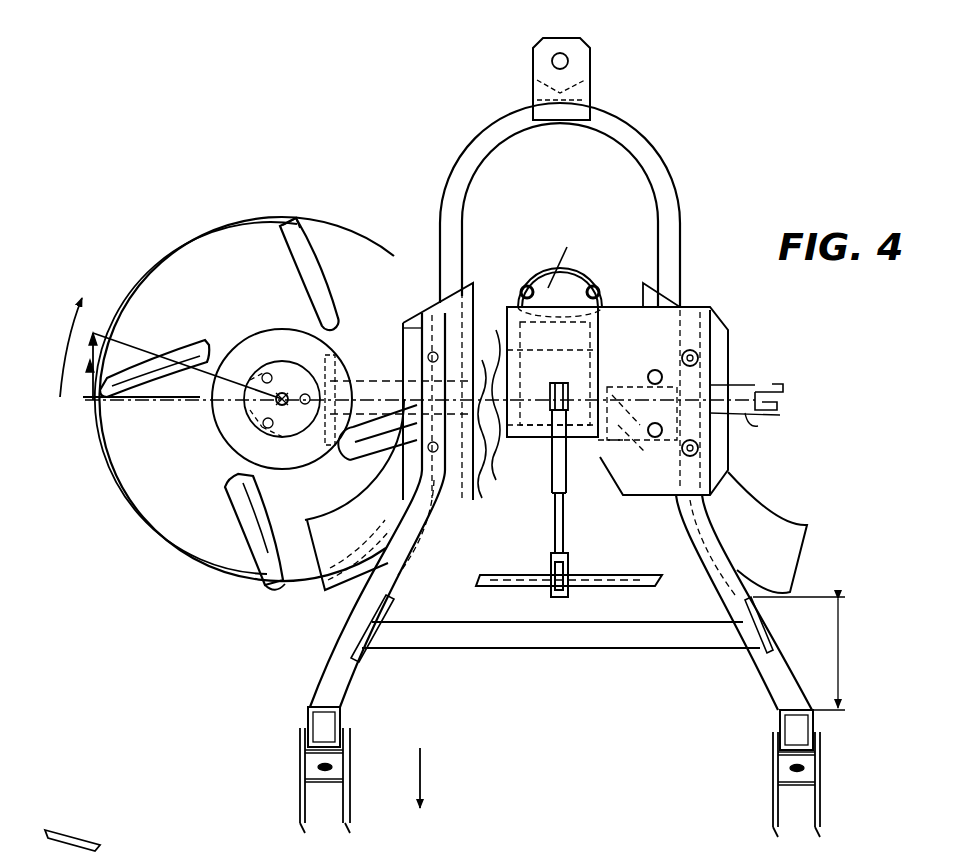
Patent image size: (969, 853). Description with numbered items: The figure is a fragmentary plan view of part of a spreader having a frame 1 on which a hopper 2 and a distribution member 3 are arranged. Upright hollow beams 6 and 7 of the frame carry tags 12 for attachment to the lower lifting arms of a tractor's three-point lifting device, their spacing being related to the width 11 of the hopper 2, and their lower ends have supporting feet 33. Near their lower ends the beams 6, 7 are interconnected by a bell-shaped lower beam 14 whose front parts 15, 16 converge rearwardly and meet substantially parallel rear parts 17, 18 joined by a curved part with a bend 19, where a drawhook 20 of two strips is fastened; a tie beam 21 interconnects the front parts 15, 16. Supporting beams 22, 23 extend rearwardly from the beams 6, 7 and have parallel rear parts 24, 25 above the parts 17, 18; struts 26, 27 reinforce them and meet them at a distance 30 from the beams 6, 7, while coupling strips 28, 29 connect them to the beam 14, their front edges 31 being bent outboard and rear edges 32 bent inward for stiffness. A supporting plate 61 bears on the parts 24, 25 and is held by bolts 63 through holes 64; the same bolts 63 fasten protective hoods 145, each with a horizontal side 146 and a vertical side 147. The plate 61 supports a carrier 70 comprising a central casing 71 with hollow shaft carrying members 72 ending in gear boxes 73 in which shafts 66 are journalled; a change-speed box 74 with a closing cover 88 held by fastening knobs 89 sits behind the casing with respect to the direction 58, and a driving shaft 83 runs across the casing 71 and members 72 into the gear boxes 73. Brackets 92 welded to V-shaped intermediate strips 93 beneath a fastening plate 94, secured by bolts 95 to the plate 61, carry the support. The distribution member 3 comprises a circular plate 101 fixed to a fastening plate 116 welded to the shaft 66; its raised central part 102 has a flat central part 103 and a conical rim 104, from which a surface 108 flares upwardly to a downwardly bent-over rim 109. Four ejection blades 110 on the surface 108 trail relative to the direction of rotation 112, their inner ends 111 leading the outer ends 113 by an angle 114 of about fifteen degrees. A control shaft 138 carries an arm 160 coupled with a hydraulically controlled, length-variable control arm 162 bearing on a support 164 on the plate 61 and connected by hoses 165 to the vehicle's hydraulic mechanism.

The frame 1 is at (300, 693).
The hopper 2 is at (511, 840).
The distribution member 3 is at (232, 220).
The upright hollow beam 6 is at (345, 710).
The upright hollow beam 7 is at (778, 728).
The width of the hopper 11 is at (122, 845).
The tags 12 is at (346, 822).
The lower beam 14 is at (668, 140).
The front part of the lower beam 15 is at (360, 665).
The front part of the lower beam 16 is at (775, 692).
The rear part of the lower beam 17 is at (457, 267).
The rear part of the lower beam 18 is at (658, 245).
The bend 19 is at (565, 122).
The drawhook 20 is at (585, 50).
The tie beam 21 is at (535, 652).
The supporting beam 22 is at (372, 665).
The supporting beam 23 is at (755, 660).
The rear part of supporting beam 24 is at (403, 330).
The rear part of supporting beam 25 is at (735, 318).
The strut 26 is at (358, 618).
The strut 27 is at (755, 625).
The coupling strip 28 is at (412, 572).
The coupling strip 29 is at (700, 580).
The distance 30 is at (840, 665).
The front edges of the coupling strips 31 is at (370, 596).
The rear edges of the coupling strips 32 is at (430, 538).
The supporting feet 33 is at (303, 765).
The direction 58 is at (423, 765).
The supporting plate 61 is at (613, 313).
The bolts 63 is at (700, 358).
The holes 64 is at (428, 357).
The shaft 66 is at (285, 393).
The carrier 70 is at (785, 387).
The central casing 71 is at (568, 500).
The hollow shaft carrying member 72 is at (756, 427).
The gear box 73 is at (306, 441).
The change-speed box 74 is at (560, 259).
The driving shaft 83 is at (780, 415).
The closing cover 88 is at (542, 278).
The releasable fastening knobs 89 is at (594, 285).
The brackets 92 is at (487, 360).
The strip-shaped intermediate pieces 93 is at (488, 455).
The fastening plate 94 is at (515, 460).
The bolts 95 is at (648, 370).
The circular plate 101 is at (344, 256).
The central part 102 is at (268, 342).
The flat central part 103 is at (257, 387).
The conical rim 104 is at (225, 418).
The surface 108 is at (433, 302).
The downwardly bent-over rim 109 is at (147, 290).
The ejection blades 110 is at (288, 215).
The inner end of blade 111 is at (338, 300).
The direction of rotation 112 is at (60, 352).
The outer end of blade 113 is at (283, 238).
The angle 114 is at (90, 398).
The fastening plate 116 is at (232, 435).
The control shaft 138 is at (530, 585).
The protective hood 145 is at (775, 530).
The horizontal side of hood 146 is at (266, 512).
The vertical side of hood 147 is at (552, 470).
The arm 160 is at (568, 598).
The hydraulically controlled control arm 162 is at (565, 512).
The support 164 is at (556, 383).
The hoses 165 is at (556, 553).